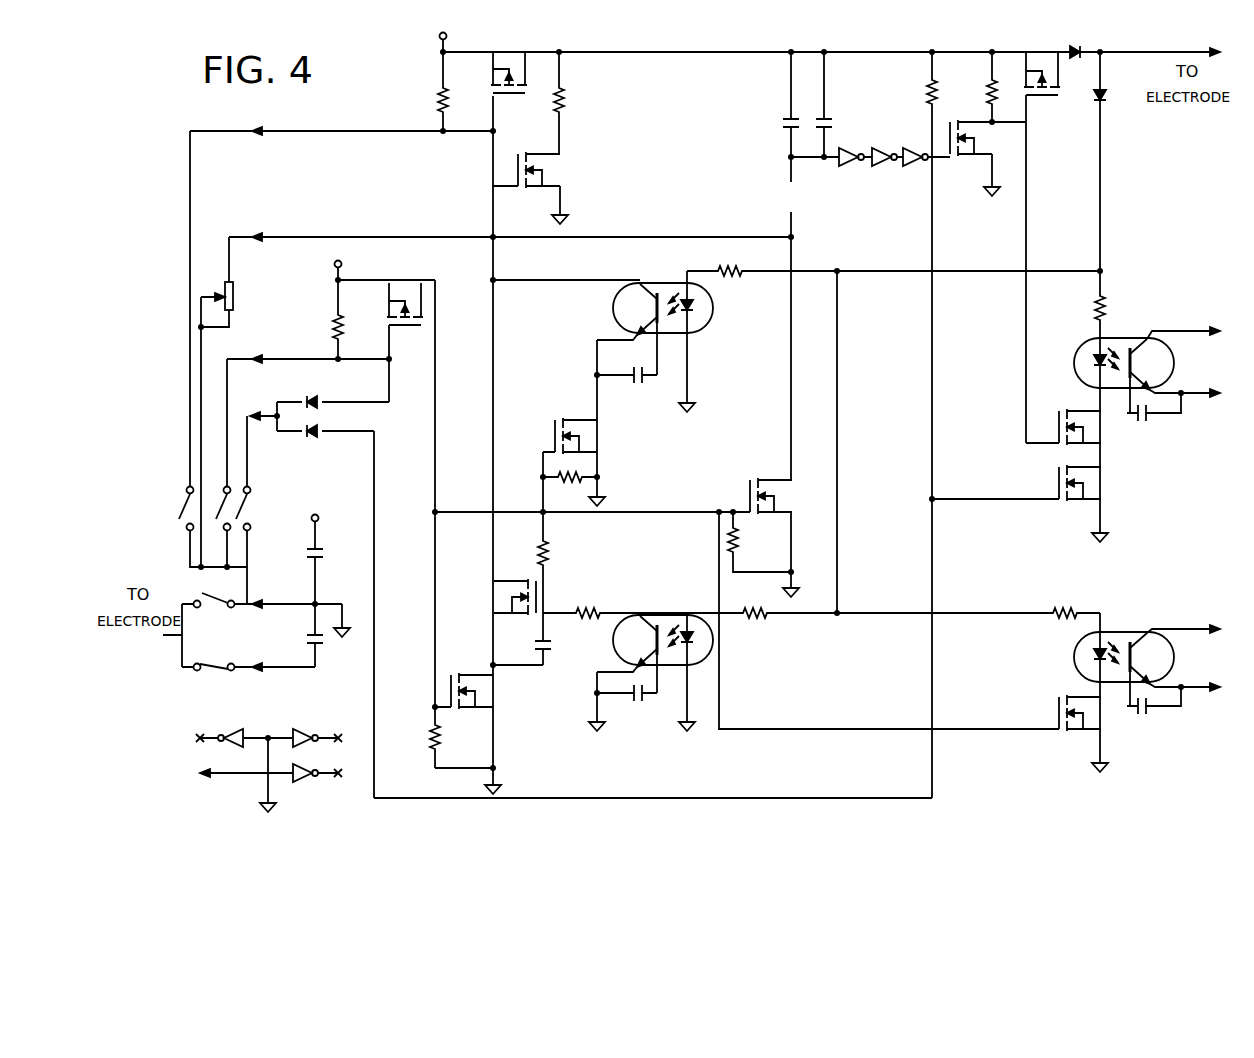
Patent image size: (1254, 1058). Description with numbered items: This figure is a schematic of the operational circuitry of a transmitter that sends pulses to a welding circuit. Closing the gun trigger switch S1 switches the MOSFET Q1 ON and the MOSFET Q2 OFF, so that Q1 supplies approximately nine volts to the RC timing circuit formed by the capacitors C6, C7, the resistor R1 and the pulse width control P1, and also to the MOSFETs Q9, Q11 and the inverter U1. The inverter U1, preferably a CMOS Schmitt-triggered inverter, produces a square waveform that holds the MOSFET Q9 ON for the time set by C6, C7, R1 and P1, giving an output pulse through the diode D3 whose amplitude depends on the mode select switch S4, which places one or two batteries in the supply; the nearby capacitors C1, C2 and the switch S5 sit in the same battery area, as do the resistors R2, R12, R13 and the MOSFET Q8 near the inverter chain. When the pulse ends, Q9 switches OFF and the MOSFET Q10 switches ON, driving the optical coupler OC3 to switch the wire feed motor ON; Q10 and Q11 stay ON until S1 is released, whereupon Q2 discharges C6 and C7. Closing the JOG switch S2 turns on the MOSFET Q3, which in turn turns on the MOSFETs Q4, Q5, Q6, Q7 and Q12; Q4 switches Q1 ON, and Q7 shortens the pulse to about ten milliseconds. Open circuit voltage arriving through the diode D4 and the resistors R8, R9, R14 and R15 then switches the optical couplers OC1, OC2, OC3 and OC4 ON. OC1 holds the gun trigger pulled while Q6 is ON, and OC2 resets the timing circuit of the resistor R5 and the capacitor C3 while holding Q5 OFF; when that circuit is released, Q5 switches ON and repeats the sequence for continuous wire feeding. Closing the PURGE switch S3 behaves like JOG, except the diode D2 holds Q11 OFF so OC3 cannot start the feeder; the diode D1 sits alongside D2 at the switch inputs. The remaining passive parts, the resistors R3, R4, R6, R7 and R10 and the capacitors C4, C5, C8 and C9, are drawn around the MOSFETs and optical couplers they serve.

The inactive element resistor R1 is at (431, 100).
The resistor R2 is at (573, 100).
The resistor R3 is at (351, 327).
The resistor R4 is at (448, 737).
The resistor R5 is at (556, 553).
The resistor R6 is at (570, 488).
The resistor R7 is at (588, 602).
The resistor R8 is at (755, 626).
The resistor R9 is at (730, 261).
The resistor R10 is at (750, 540).
The resistor R12 is at (916, 93).
The resistor R13 is at (974, 93).
The resistor R14 is at (1117, 308).
The resistor R15 is at (1065, 602).
The capacitor C1 is at (304, 553).
The capacitor C2 is at (302, 639).
The capacitor C3 is at (558, 645).
The capacitor C4 is at (638, 709).
The capacitor C5 is at (638, 389).
The timing capacitor C6 is at (777, 124).
The timing capacitor C7 is at (837, 124).
The capacitor C8 is at (1150, 423).
The capacitor C9 is at (1142, 720).
The MOSFET Q1 is at (496, 73).
The MOSFET Q2 is at (555, 170).
The MOSFET Q3 is at (405, 291).
The MOSFET Q4 is at (488, 691).
The MOSFET Q5 is at (501, 597).
The MOSFET Q6 is at (562, 436).
The MOSFET Q7 is at (757, 495).
The MOSFET Q8 is at (985, 138).
The MOSFET Q9 is at (1042, 87).
The MOSFET Q10 is at (1099, 429).
The MOSFET Q11 is at (1100, 483).
The MOSFET Q12 is at (1061, 713).
The diode D1 is at (314, 391).
The diode D2 is at (314, 444).
The diode D3 is at (1078, 66).
The diode D4 is at (1114, 104).
The pulse width control P1 is at (243, 296).
The gun trigger switch S1 is at (175, 509).
The JOG switch S2 is at (232, 487).
The PURGE switch S3 is at (257, 509).
The mode select switch S4 is at (214, 614).
The switch S5 is at (214, 680).
The optical coupler OC1 is at (645, 309).
The optical coupler OC2 is at (663, 641).
The optical coupler OC3 is at (1143, 364).
The optical coupler OC4 is at (1143, 658).
The CMOS Schmitt-triggered inverter U1 is at (573, 479).